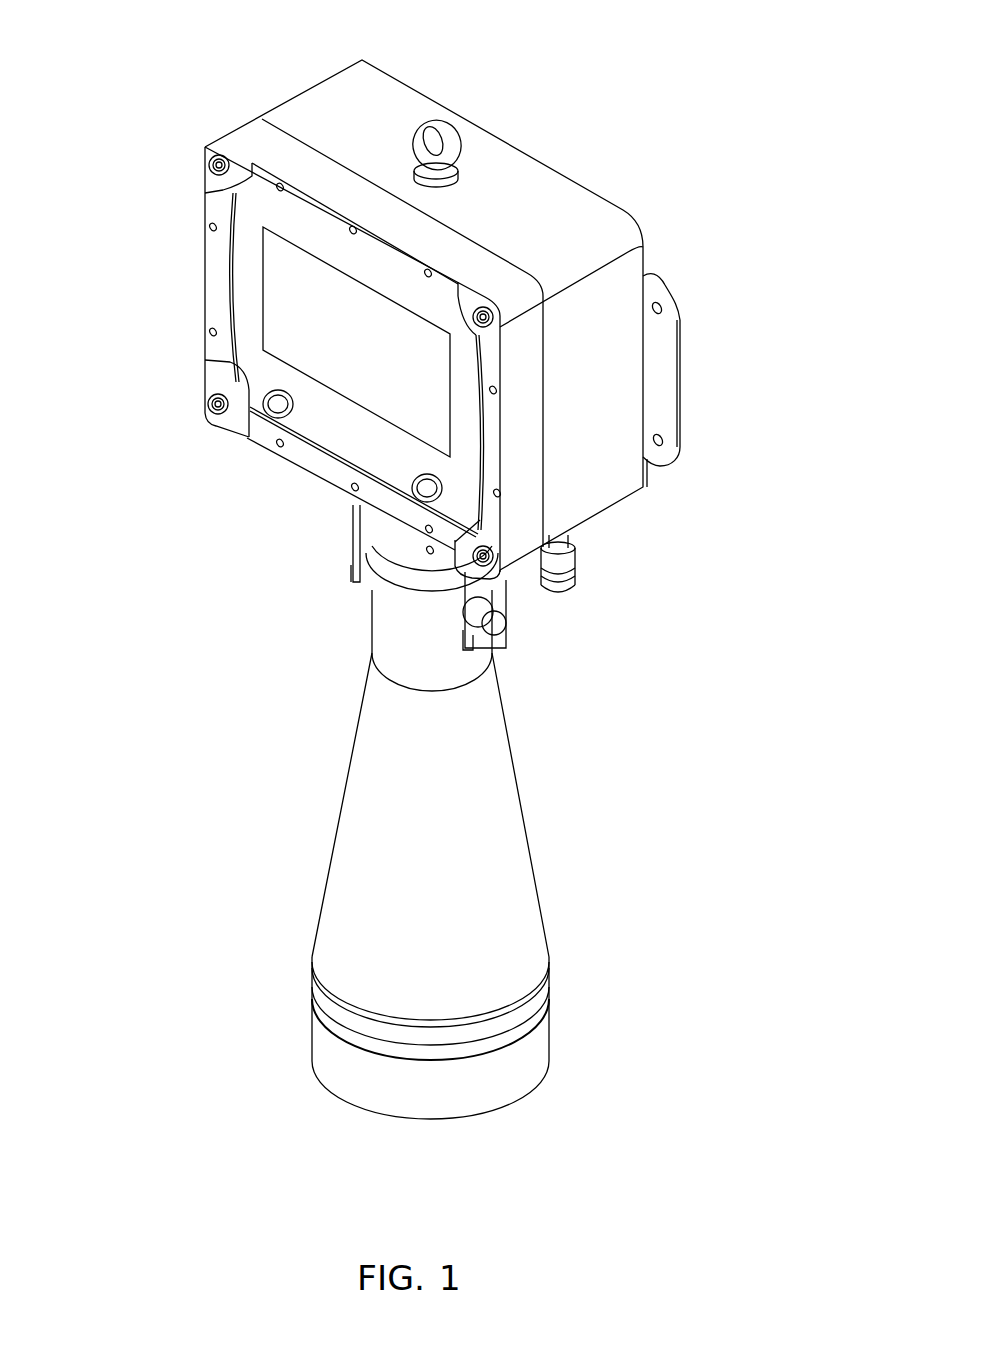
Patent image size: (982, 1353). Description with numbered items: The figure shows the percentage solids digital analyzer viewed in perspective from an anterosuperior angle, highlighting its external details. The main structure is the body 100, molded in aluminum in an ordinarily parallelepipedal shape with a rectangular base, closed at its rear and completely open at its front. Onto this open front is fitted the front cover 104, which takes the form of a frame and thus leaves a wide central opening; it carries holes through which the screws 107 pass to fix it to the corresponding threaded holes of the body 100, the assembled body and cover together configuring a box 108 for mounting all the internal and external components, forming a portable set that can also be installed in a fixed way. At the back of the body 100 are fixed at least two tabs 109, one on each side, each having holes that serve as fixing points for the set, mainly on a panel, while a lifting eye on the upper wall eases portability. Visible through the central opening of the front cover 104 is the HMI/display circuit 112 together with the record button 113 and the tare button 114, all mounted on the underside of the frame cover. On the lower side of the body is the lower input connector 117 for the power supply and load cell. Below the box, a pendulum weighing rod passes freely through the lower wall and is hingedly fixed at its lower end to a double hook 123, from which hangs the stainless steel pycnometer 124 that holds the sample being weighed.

The body 100 is at (410, 89).
The front cover 104 is at (252, 143).
The screws 107 is at (215, 164).
The box 108 is at (563, 157).
The tabs 109 is at (665, 367).
The HMI/display circuit 112 is at (295, 298).
The record button 113 is at (420, 492).
The tare button 114 is at (275, 417).
The lower input connector 117 is at (577, 569).
The double hook 123 is at (500, 590).
The pycnometer 124 is at (385, 841).